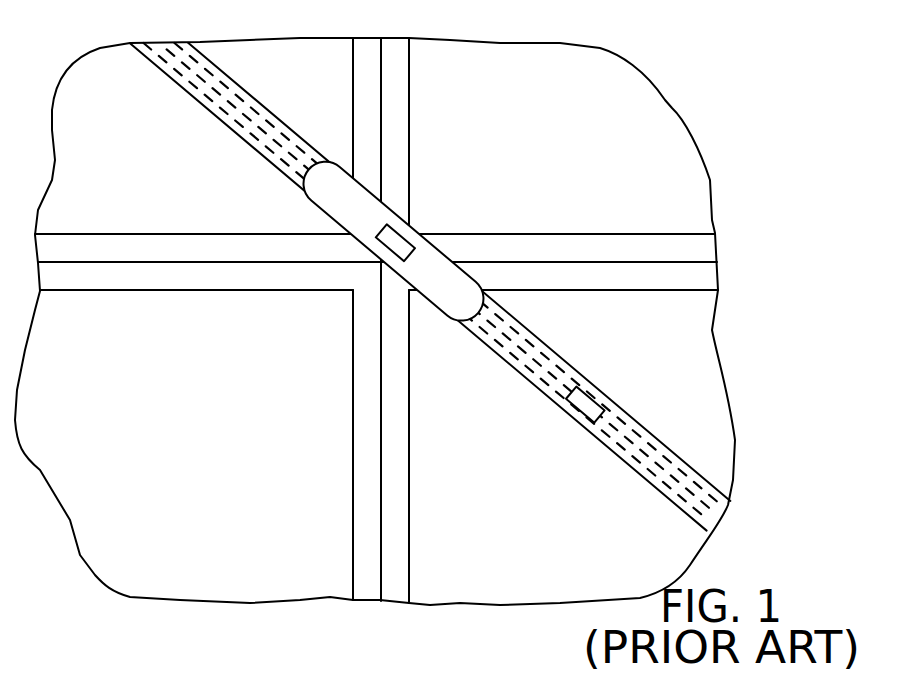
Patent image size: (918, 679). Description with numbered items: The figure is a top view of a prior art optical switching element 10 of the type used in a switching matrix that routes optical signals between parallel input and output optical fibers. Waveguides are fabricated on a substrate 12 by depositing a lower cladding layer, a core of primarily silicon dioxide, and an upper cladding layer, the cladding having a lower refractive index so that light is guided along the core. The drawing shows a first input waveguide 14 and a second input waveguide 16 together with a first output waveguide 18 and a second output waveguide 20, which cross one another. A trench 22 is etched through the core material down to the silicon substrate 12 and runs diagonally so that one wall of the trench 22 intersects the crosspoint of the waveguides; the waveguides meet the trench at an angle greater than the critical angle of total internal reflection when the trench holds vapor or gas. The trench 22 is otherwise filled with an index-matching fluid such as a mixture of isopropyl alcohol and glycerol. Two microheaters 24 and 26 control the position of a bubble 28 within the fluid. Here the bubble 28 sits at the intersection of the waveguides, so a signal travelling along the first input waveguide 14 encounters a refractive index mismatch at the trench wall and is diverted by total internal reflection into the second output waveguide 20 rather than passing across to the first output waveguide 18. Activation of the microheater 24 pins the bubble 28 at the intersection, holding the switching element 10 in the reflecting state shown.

The switching element 10 is at (686, 50).
The substrate 12 is at (108, 555).
The first input waveguide 14 is at (143, 240).
The second input waveguide 16 is at (407, 103).
The first output waveguide 18 is at (602, 240).
The second output waveguide 20 is at (358, 452).
The trench 22 is at (233, 124).
The microheater 24 is at (405, 237).
The microheater 26 is at (592, 408).
The bubble 28 is at (333, 200).